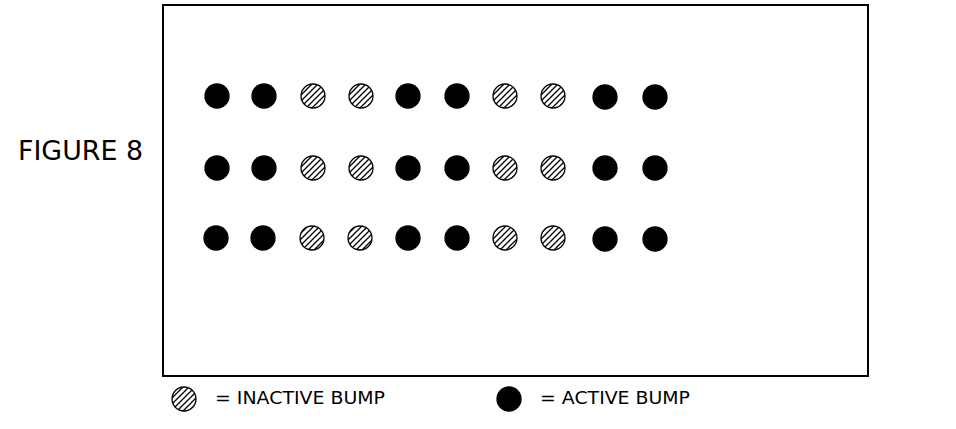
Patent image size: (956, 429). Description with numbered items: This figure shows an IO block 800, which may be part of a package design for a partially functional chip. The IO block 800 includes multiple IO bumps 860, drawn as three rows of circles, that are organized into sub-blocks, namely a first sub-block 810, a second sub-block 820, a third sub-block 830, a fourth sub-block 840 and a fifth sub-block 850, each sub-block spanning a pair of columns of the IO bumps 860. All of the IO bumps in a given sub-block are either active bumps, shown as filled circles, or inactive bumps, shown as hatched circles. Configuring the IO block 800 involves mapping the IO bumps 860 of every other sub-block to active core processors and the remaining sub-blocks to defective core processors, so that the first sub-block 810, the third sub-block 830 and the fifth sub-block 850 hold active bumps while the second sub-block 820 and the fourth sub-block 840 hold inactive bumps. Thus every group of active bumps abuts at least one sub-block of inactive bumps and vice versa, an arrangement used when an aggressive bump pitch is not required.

The IO block 800 is at (515, 190).
The Sub-block 1 810 is at (282, 266).
The Sub-block 2 820 is at (381, 78).
The Sub-block 3 830 is at (474, 266).
The Sub-block 4 840 is at (573, 80).
The Sub-block 5 850 is at (672, 266).
The IO bumps 860 is at (510, 173).